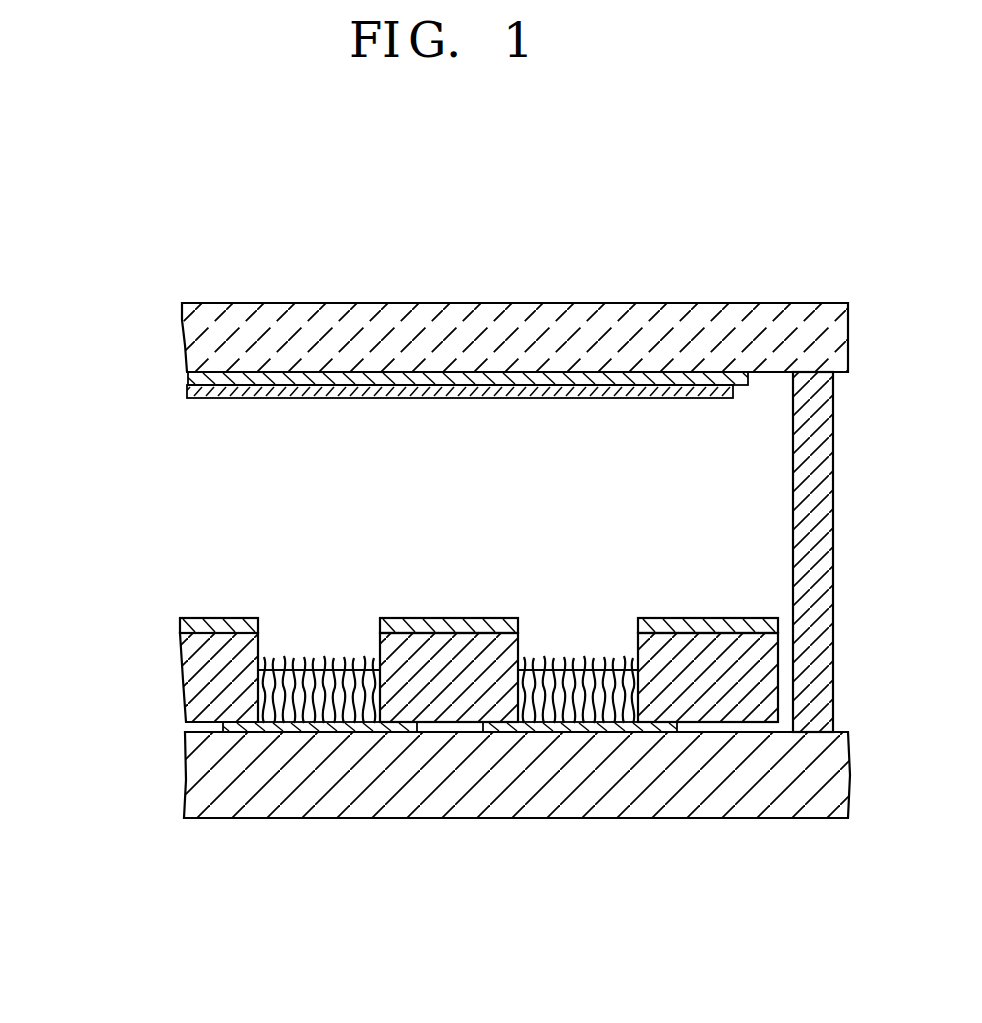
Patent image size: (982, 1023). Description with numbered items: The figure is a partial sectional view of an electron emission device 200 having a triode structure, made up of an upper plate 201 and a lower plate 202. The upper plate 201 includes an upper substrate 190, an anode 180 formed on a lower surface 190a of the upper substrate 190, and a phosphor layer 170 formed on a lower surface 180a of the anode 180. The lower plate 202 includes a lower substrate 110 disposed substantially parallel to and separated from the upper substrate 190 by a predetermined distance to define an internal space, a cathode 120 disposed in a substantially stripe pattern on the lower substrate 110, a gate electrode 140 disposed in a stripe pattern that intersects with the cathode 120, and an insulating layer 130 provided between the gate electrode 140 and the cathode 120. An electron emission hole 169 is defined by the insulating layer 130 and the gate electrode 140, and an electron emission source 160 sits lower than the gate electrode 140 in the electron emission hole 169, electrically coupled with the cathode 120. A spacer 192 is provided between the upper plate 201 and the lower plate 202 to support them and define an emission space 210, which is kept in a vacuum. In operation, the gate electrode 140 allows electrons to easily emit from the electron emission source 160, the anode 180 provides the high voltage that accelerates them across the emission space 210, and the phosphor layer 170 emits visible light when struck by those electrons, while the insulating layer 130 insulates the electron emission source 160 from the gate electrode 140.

The lower substrate 110 is at (195, 760).
The cathode 120 is at (225, 729).
The insulating layer 130 is at (190, 682).
The gate electrode 140 is at (182, 627).
The electron emission source 160 is at (315, 725).
The electron emission hole 169 is at (302, 637).
The phosphor layer 170 is at (545, 396).
The anode 180 is at (413, 380).
The lower surface of the anode 180a is at (482, 390).
The upper substrate 190 is at (268, 318).
The lower surface of the upper substrate 190a is at (340, 374).
The spacer 192 is at (826, 553).
The electron emission device 200 is at (100, 438).
The upper plate 201 is at (156, 391).
The lower plate 202 is at (162, 604).
The emission space 210 is at (481, 506).